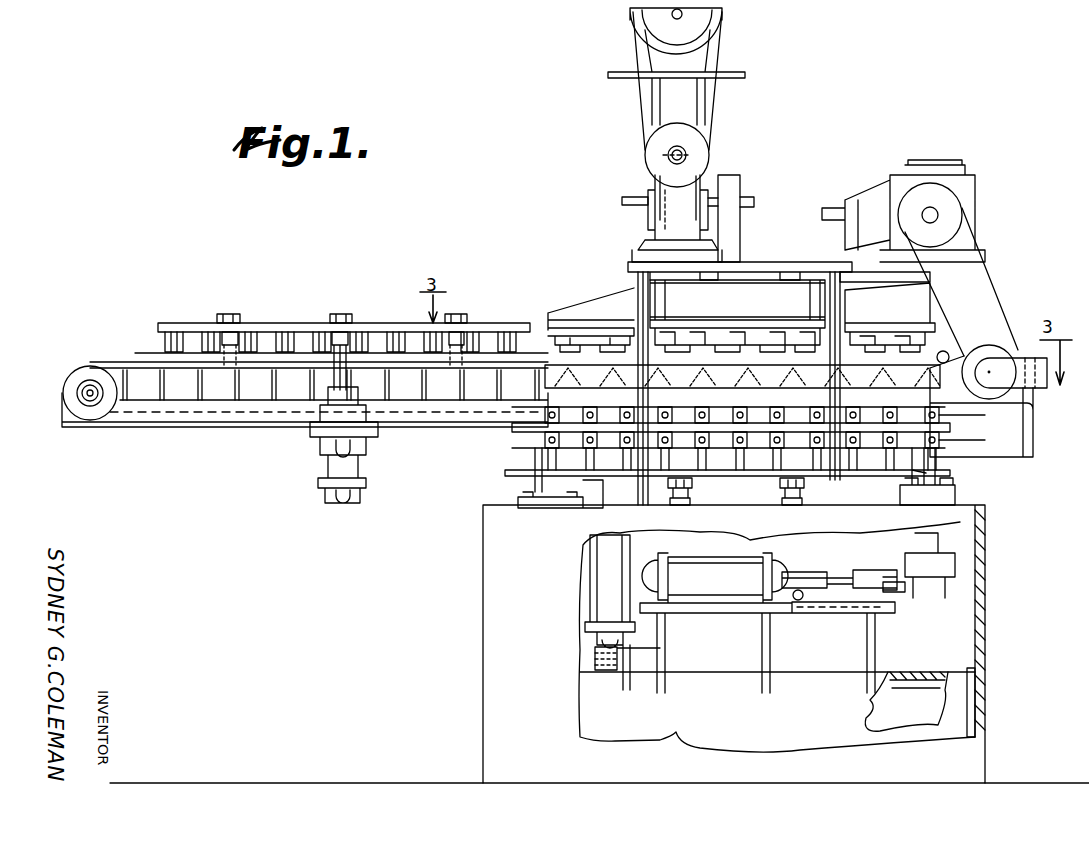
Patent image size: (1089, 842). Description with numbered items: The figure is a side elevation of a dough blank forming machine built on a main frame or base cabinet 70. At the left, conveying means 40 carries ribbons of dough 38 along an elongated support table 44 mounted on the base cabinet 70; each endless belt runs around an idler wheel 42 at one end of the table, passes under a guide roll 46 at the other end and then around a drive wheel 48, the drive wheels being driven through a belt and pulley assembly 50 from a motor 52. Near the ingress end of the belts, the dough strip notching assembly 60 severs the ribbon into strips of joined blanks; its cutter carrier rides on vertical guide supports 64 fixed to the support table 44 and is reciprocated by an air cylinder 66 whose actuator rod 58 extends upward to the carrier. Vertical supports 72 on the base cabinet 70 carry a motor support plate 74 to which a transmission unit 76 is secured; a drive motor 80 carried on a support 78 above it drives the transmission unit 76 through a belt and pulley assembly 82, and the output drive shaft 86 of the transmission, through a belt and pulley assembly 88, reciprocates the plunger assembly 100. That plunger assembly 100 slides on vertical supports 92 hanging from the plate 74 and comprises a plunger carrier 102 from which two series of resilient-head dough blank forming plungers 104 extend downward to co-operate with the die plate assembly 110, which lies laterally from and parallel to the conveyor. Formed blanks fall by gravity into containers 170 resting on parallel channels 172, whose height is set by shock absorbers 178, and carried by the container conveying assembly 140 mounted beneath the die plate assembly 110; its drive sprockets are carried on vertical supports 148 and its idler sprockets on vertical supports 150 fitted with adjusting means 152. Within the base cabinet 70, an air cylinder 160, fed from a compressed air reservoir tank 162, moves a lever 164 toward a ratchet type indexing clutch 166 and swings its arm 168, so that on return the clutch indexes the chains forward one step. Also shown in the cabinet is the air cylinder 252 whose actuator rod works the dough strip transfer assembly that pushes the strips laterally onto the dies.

The ribbons of dough 38 is at (170, 340).
The conveying means 40 is at (117, 357).
The idler wheel 42 is at (72, 393).
The support table 44 is at (331, 389).
The guide roll 46 is at (948, 352).
The drive wheel 48 is at (1015, 350).
The belt and pulley assembly 50 is at (1006, 281).
The motor 52 is at (980, 195).
The actuator rod 58 is at (344, 342).
The dough strip notching assembly 60 is at (305, 315).
The vertical guide supports 64 is at (228, 340).
The air cylinder 66 is at (335, 462).
The base cabinet 70 is at (500, 683).
The vertical supports 72 is at (637, 310).
The motor support plate 74 is at (752, 268).
The transmission unit 76 is at (664, 214).
The support 78 is at (748, 76).
The drive motor 80 is at (730, 30).
The belt and pulley assembly 82 is at (727, 150).
The output drive shaft 86 is at (757, 201).
The belt and pulley assembly 88 is at (741, 183).
The vertical supports 92 is at (790, 272).
The plunger assembly 100 is at (589, 282).
The plunger carrier 102 is at (712, 313).
The dough blank forming plungers 104 is at (905, 336).
The die plate assembly 110 is at (732, 364).
The container conveying assembly 140 is at (512, 446).
The vertical supports 148 is at (950, 487).
The vertical supports 150 is at (535, 468).
The adjusting means 152 is at (592, 500).
The air cylinder 160 is at (735, 591).
The compressed air reservoir tank 162 is at (800, 719).
The lever 164 is at (840, 582).
The ratchet type indexing clutch 166 is at (955, 565).
The arm 168 is at (907, 585).
The containers 170 is at (730, 468).
The channels 172 is at (880, 470).
The shock absorber 178 is at (808, 500).
The air cylinder 252 is at (620, 586).